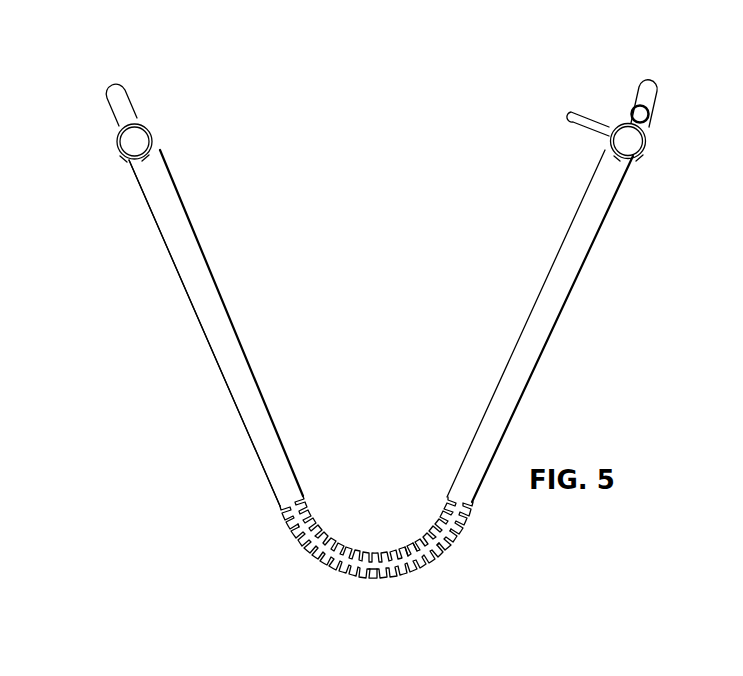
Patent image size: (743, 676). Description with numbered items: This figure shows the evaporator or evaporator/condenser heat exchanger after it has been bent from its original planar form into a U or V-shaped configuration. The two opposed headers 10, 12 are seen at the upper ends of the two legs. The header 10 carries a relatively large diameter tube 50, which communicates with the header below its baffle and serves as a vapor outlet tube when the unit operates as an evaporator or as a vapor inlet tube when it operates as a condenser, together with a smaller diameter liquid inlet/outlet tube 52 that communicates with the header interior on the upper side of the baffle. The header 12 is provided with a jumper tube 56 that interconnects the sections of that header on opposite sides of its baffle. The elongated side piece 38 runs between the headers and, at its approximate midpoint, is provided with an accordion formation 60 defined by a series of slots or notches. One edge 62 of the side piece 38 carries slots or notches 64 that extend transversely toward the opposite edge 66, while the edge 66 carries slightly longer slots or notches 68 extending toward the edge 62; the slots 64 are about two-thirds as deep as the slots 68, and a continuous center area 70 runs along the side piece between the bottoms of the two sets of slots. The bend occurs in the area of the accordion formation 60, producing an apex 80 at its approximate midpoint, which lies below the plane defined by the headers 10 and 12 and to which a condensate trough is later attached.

The header 10 is at (636, 147).
The header 12 is at (143, 138).
The side piece 38 is at (553, 320).
The large diameter tube 50 is at (654, 93).
The liquid inlet/outlet tube 52 is at (594, 113).
The jumper tube 56 is at (123, 101).
The accordion formation 60 is at (358, 528).
The edge 62 is at (243, 344).
The slots or notches 64 is at (424, 531).
The edge 66 is at (220, 381).
The slots or notches 68 is at (458, 536).
The continuous center area 70 is at (311, 546).
The apex 80 is at (374, 580).